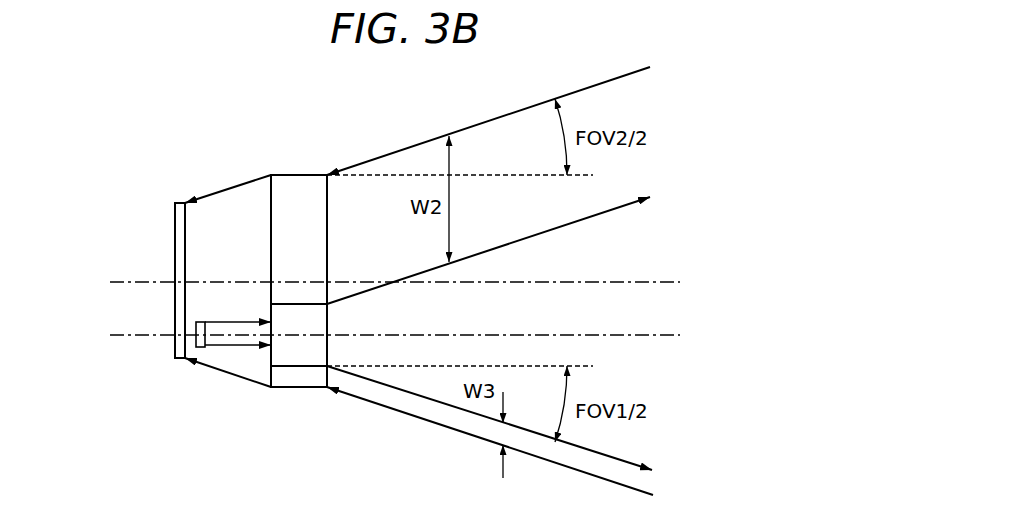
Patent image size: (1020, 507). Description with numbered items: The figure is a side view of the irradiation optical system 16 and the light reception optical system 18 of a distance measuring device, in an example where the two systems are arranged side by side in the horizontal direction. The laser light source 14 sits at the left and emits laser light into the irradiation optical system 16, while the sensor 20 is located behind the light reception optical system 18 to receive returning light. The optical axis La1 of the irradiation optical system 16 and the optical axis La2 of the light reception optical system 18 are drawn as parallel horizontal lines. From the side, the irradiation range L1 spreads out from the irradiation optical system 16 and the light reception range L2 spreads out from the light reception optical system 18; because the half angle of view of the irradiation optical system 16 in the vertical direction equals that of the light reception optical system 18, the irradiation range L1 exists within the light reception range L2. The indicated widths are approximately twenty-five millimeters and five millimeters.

The laser light source 14 is at (204, 342).
The irradiation optical system 16 is at (300, 355).
The light reception optical system 18 is at (300, 185).
The sensor 20 is at (178, 245).
The irradiation range L1 is at (550, 230).
The light reception range L2 is at (403, 412).
The optical axis La1 is at (147, 340).
The optical axis La2 is at (147, 275).